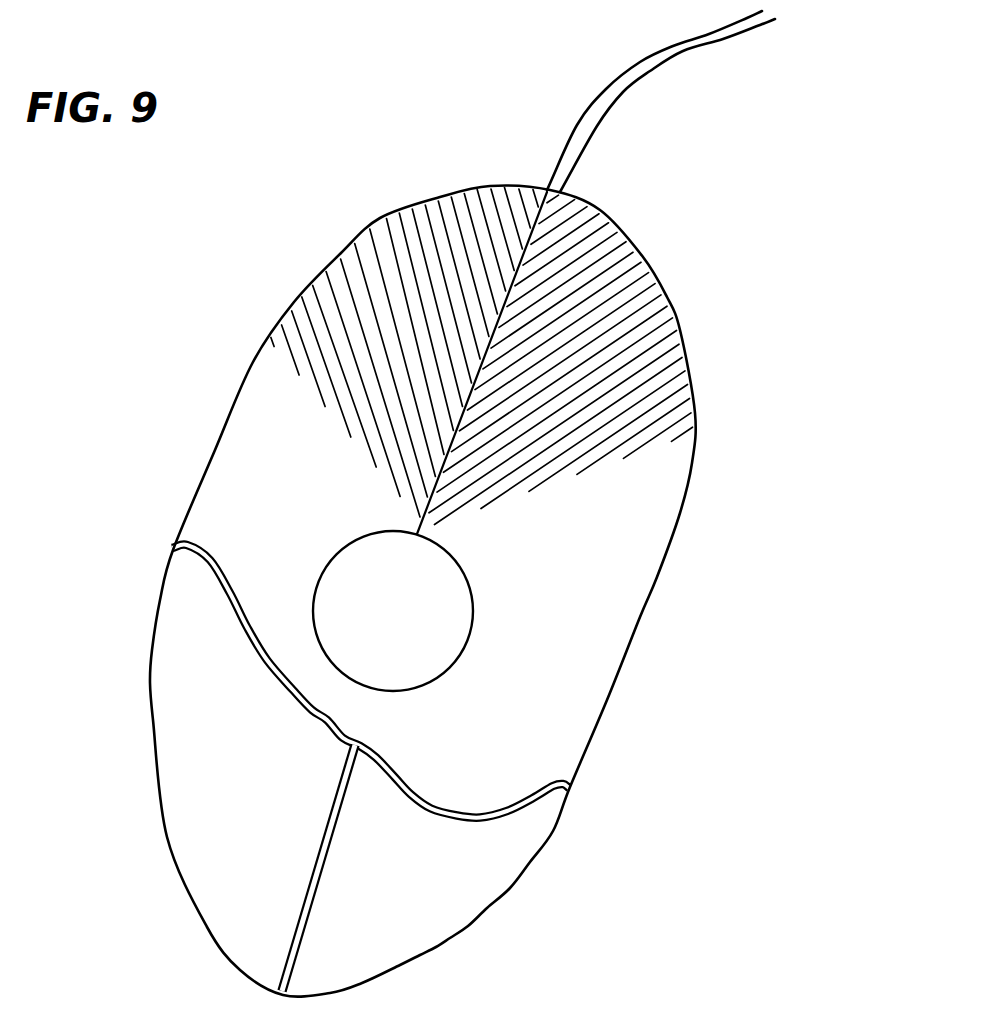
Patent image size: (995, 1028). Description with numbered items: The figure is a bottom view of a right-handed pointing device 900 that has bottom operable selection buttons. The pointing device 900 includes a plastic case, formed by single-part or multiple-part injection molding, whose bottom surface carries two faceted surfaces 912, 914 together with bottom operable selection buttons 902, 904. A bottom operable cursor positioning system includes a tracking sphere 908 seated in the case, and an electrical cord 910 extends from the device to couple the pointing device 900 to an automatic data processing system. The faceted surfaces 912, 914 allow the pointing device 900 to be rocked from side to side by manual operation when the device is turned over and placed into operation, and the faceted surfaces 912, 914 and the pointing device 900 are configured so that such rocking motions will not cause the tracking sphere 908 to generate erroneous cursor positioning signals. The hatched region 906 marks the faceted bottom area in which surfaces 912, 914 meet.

The pointing device 900 is at (733, 604).
The bottom operable selection button 902 is at (210, 812).
The bottom operable selection button 904 is at (423, 917).
The touch sensitive surface 906 is at (392, 212).
The tracking sphere 908 is at (470, 642).
The electrical cord 910 is at (653, 77).
The faceted surface 912 is at (417, 312).
The faceted surface 914 is at (560, 430).